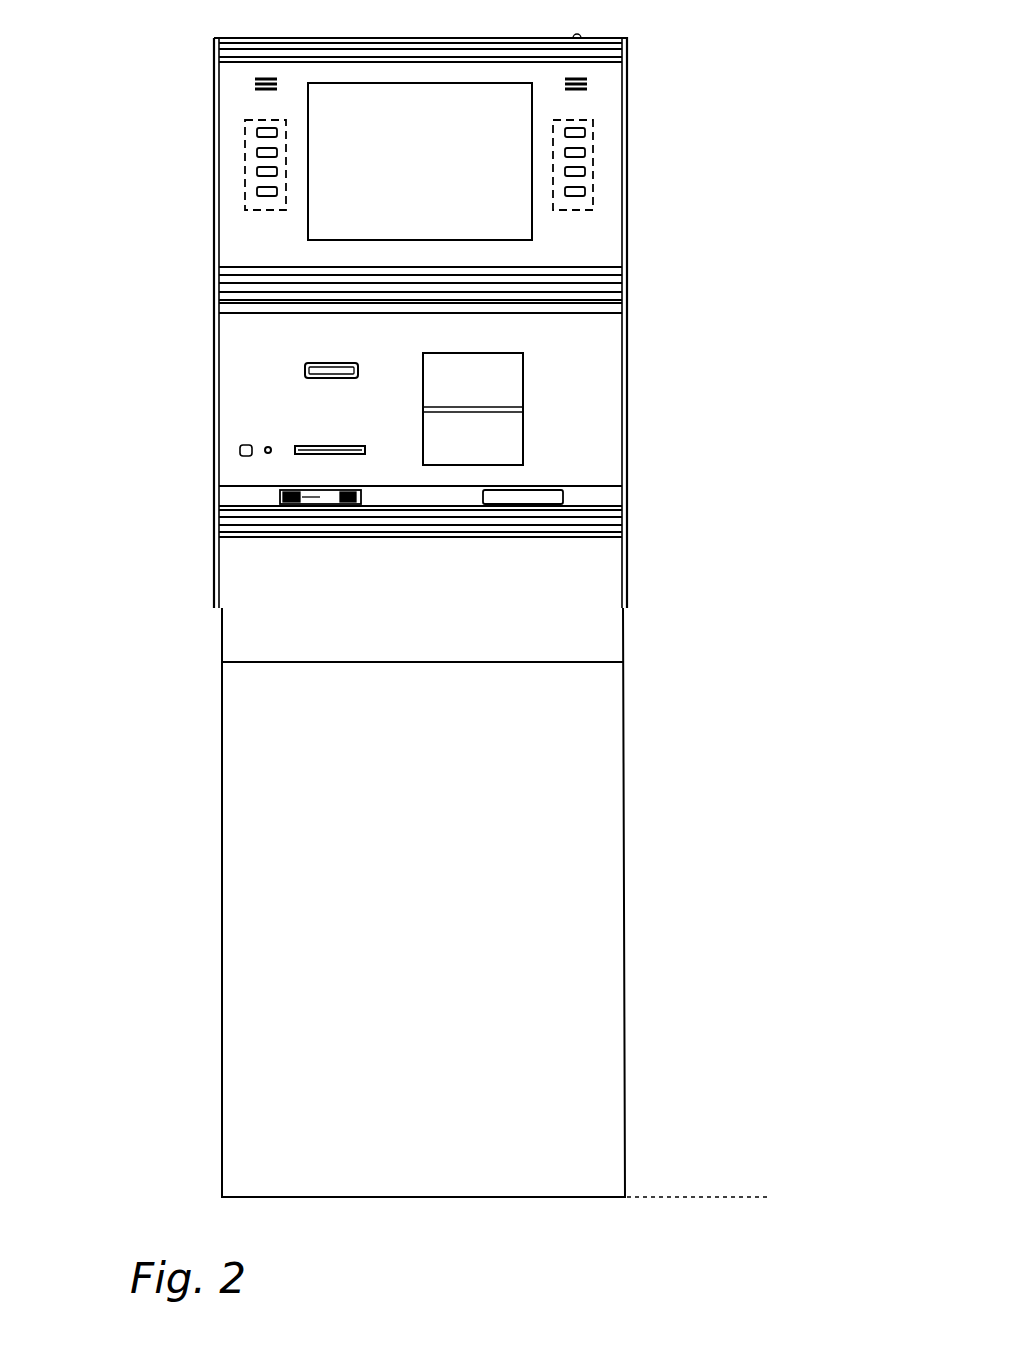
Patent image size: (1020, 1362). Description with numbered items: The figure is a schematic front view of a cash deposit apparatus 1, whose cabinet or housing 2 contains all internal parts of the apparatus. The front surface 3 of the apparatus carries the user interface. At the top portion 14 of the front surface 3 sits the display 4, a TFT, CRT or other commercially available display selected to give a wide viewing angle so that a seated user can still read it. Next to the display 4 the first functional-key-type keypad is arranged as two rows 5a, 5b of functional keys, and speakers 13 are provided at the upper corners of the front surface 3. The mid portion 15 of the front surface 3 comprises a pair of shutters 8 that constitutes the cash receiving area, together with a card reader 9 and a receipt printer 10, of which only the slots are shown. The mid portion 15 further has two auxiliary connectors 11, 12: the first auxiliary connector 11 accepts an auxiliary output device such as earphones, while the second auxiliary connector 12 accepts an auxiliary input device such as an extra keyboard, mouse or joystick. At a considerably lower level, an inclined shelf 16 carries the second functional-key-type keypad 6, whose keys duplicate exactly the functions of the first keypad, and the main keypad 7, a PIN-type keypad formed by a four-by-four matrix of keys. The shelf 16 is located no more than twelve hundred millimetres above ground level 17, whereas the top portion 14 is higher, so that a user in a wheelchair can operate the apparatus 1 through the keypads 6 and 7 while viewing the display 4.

The cash deposit apparatus 1 is at (104, 651).
The cabinet or housing 2 is at (218, 607).
The front surface 3 is at (585, 380).
The display 4 is at (420, 161).
The row of functional keys 5a is at (590, 152).
The row of functional keys 5b is at (245, 183).
The second functional-key-type keypad 6 is at (288, 497).
The main keypad 7 is at (543, 495).
The pair of shutters 8 is at (505, 372).
The card reader 9 is at (305, 372).
The receipt printer 10 is at (365, 450).
The first auxiliary connector 11 is at (268, 440).
The second auxiliary connector 12 is at (246, 444).
The speakers 13 is at (256, 87).
The top portion 14 is at (603, 243).
The mid portion 15 is at (610, 422).
The inclined shelf 16 is at (598, 498).
The ground level 17 is at (705, 1197).